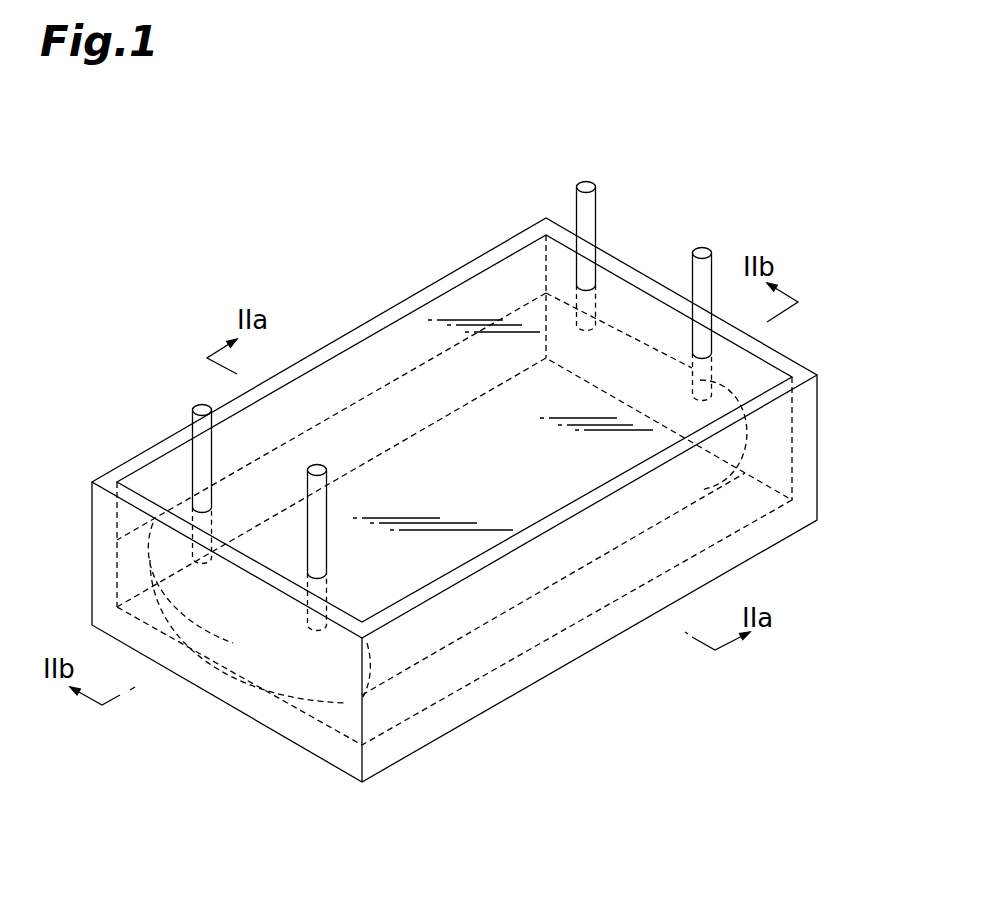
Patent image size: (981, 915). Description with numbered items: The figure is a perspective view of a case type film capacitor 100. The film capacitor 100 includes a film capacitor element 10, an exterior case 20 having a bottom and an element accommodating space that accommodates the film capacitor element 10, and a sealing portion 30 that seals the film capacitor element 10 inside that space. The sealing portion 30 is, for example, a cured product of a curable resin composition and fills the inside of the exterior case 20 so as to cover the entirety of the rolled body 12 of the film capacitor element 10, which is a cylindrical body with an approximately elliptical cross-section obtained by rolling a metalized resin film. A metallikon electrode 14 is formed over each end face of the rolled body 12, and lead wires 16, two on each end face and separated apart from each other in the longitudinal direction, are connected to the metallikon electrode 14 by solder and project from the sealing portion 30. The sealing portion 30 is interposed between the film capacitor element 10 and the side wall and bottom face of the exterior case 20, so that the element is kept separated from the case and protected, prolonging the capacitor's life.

The film capacitor 100 is at (472, 457).
The film capacitor element 10 is at (392, 460).
The rolled body 12 is at (447, 572).
The metallikon electrode 14 is at (248, 632).
The lead wire 16 is at (500, 748).
The exterior case 20 is at (820, 437).
The sealing portion 30 is at (380, 365).